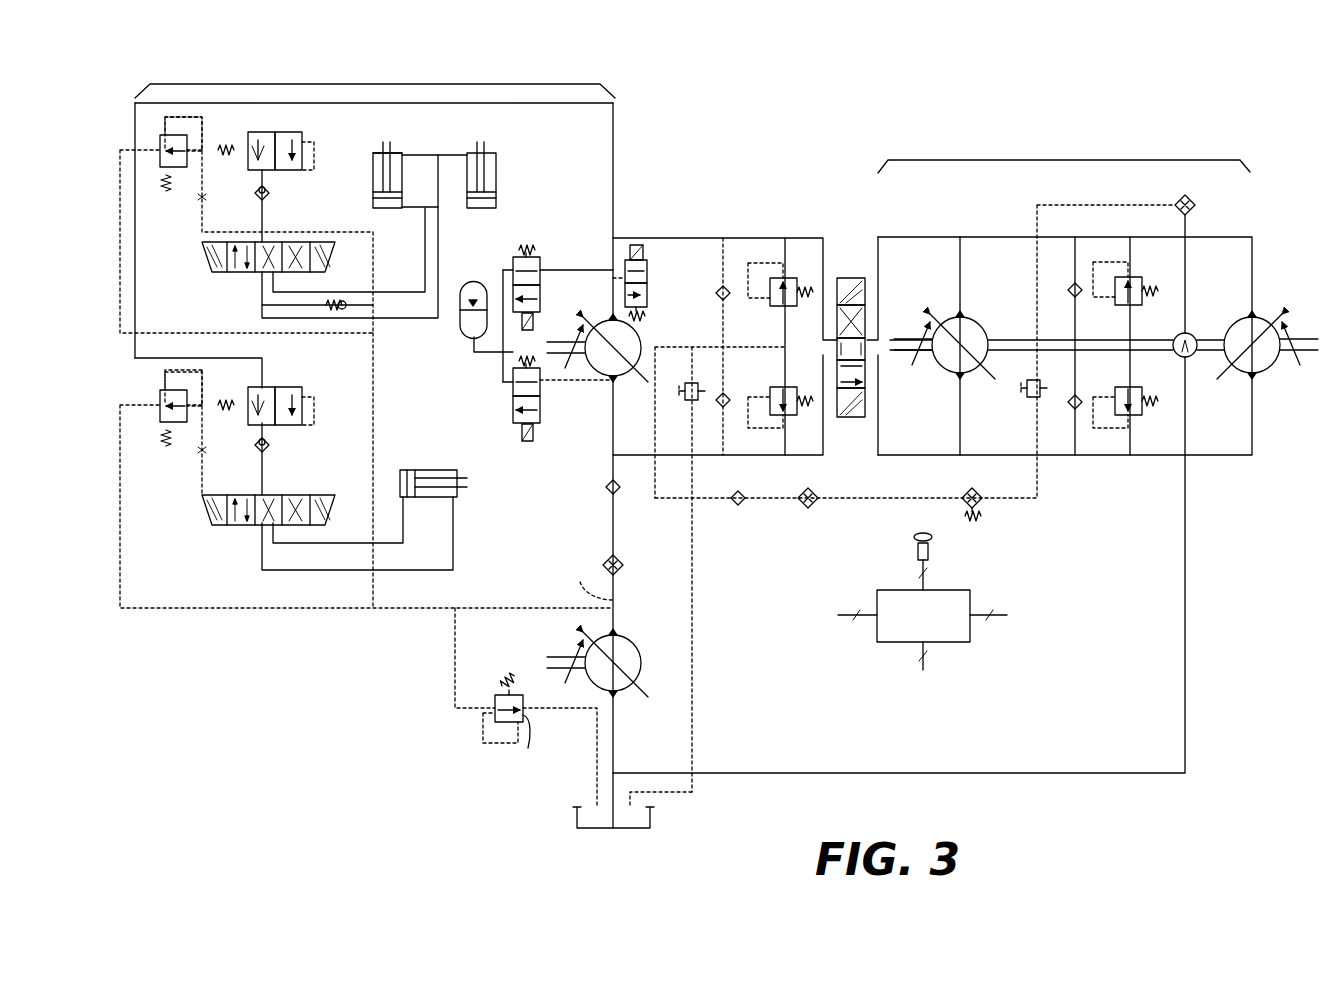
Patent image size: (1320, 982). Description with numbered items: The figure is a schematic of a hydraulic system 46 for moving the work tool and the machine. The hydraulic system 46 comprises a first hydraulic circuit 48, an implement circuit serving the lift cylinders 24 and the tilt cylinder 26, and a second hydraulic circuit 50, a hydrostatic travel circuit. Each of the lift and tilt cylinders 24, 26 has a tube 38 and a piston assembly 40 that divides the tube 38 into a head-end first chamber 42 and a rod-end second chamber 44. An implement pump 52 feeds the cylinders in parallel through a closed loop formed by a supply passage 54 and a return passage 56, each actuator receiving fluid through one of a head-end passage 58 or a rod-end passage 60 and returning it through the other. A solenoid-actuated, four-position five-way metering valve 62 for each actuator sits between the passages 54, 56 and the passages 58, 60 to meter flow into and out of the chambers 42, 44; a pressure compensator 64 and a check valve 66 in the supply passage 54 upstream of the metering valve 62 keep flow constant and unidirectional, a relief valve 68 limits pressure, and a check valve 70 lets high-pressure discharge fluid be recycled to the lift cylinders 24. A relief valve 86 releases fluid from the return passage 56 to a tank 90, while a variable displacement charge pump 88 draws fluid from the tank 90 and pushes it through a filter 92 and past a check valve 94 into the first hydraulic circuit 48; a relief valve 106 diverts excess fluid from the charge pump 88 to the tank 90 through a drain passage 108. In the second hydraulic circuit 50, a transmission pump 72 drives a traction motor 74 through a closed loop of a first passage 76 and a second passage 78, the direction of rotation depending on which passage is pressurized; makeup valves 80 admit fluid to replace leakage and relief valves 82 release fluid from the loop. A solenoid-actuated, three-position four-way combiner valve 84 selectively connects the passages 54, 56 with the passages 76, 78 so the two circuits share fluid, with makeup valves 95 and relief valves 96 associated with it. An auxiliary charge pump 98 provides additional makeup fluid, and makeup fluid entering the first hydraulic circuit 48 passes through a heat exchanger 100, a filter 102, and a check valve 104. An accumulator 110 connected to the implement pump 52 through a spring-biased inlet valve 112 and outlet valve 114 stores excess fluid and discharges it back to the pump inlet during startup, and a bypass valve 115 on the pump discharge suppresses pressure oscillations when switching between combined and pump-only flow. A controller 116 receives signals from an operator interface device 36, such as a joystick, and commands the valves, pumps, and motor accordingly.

The lift cylinder 24 is at (550, 175).
The tilt cylinder 26 is at (495, 453).
The operator interface device 36 is at (930, 546).
The tube 38 is at (497, 160).
The piston assembly 40 is at (497, 198).
The first chamber 42 is at (373, 200).
The second chamber 44 is at (373, 165).
The hydraulic system 46 is at (1040, 90).
The first hydraulic circuit 48 is at (372, 82).
The second hydraulic circuit 50 is at (1062, 158).
The implement pump 52 is at (612, 358).
The supply passage 54 is at (613, 148).
The return passage 56 is at (378, 383).
The head-end passage 58 is at (425, 232).
The rod-end passage 60 is at (438, 262).
The metering valve 62 is at (215, 290).
The pressure compensator 64 is at (322, 135).
The check valve 66 is at (283, 200).
The pressure relief valve 68 is at (170, 193).
The check valve 70 is at (345, 282).
The transmission pump 72 is at (975, 326).
The traction motor 74 is at (1228, 328).
The first passage 76 is at (1203, 237).
The second passage 78 is at (1218, 455).
The makeup valve 80 is at (1071, 302).
The relief valve 82 is at (1145, 268).
The combiner valve 84 is at (850, 262).
The relief valve 86 is at (526, 708).
The charge pump 88 is at (640, 663).
The tank 90 is at (650, 815).
The filter 92 is at (623, 565).
The check valve 94 is at (620, 486).
The makeup valve 95 is at (712, 297).
The relief valve 96 is at (765, 312).
The charge pump 98 is at (1180, 340).
The heat exchanger 100 is at (983, 493).
The filter 102 is at (815, 492).
The check valve 104 is at (742, 494).
The relief valve 106 is at (681, 414).
The drain passage 108 is at (690, 622).
The accumulator 110 is at (472, 335).
The inlet valve 112 is at (540, 262).
The outlet valve 114 is at (540, 418).
The bypass valve 115 is at (647, 270).
The controller 116 is at (932, 640).